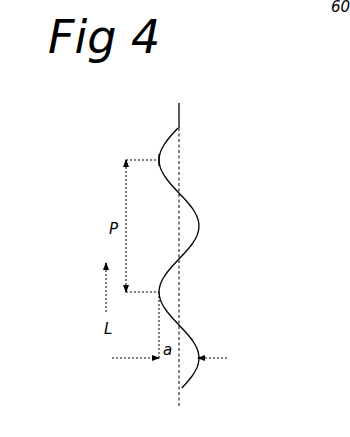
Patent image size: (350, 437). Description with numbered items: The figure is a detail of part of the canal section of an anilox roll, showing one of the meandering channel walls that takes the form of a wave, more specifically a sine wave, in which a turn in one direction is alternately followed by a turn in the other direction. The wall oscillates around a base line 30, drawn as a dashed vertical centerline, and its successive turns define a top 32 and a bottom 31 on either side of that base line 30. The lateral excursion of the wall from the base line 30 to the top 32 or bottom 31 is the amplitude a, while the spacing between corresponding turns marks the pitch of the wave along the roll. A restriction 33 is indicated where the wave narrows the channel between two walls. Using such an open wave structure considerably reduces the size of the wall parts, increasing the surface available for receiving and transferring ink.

The base line 30 is at (179, 103).
The bottom 31 is at (199, 227).
The top 32 is at (160, 159).
The restriction 33 is at (207, 267).